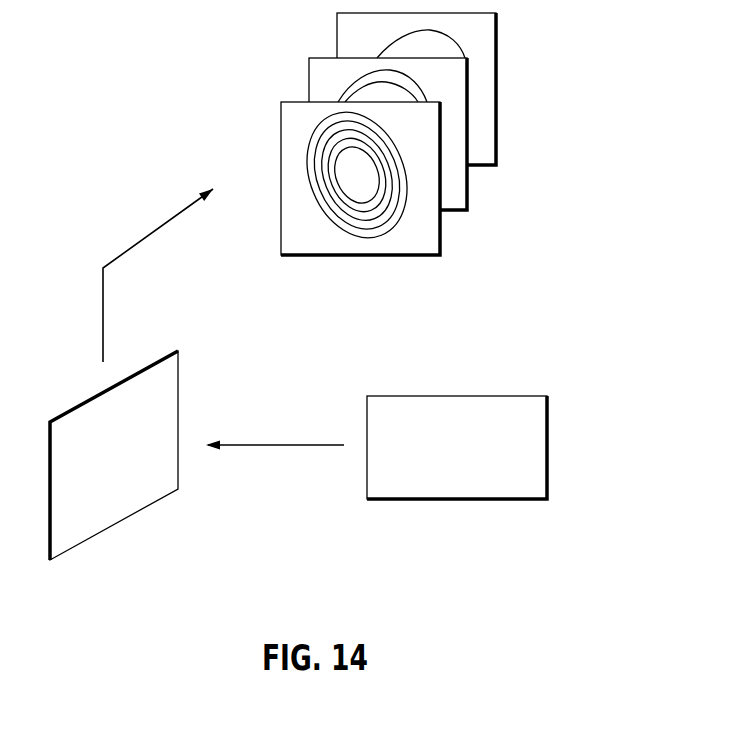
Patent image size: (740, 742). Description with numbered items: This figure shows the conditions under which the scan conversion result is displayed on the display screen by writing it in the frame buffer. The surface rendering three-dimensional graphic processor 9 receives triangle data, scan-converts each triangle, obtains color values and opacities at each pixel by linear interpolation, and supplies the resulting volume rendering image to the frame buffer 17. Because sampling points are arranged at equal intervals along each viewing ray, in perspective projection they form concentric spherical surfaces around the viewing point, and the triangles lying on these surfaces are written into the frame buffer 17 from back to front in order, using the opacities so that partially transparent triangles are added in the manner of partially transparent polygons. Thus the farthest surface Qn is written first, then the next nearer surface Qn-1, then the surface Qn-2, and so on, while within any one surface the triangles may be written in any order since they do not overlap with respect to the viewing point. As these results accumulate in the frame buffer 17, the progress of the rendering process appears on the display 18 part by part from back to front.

The display 18 is at (408, 144).
The concentric spherical surface Qn is at (482, 150).
The concentric spherical surface Qn-1 is at (465, 200).
The concentric spherical surface Qn-2 is at (432, 245).
The frame buffer 17 is at (137, 498).
The surface rendering 3-D graphic processor 9 is at (462, 410).